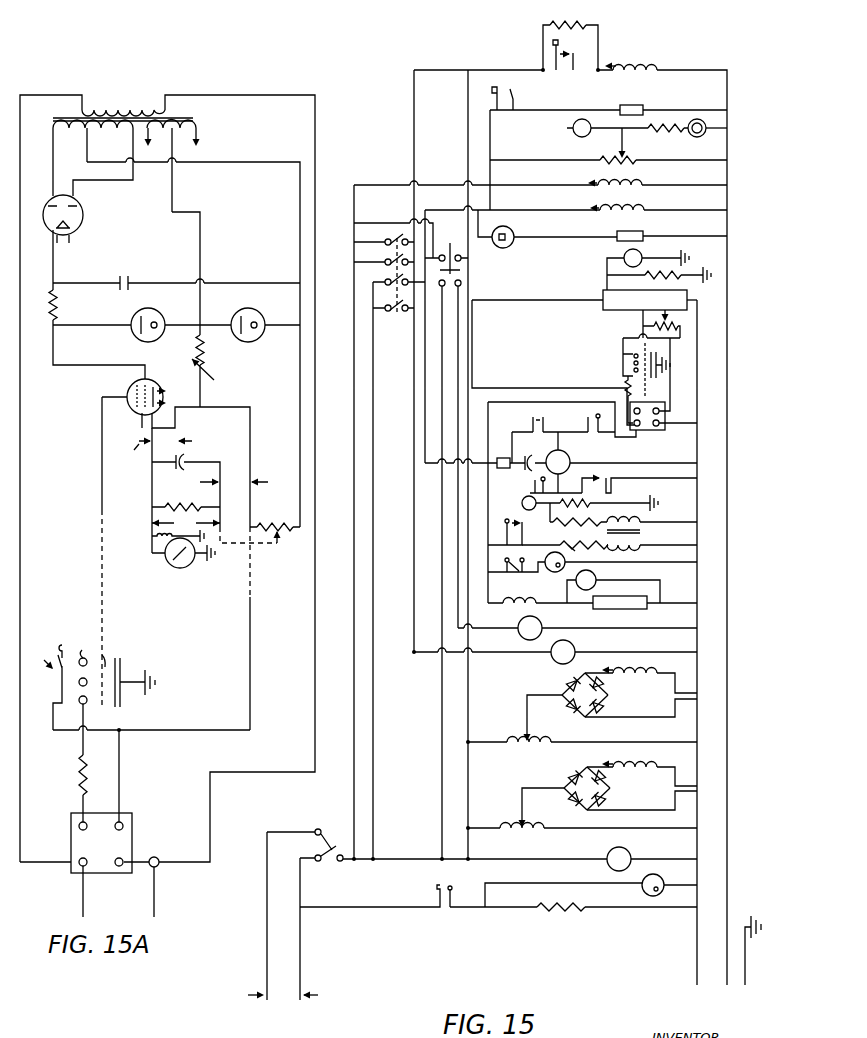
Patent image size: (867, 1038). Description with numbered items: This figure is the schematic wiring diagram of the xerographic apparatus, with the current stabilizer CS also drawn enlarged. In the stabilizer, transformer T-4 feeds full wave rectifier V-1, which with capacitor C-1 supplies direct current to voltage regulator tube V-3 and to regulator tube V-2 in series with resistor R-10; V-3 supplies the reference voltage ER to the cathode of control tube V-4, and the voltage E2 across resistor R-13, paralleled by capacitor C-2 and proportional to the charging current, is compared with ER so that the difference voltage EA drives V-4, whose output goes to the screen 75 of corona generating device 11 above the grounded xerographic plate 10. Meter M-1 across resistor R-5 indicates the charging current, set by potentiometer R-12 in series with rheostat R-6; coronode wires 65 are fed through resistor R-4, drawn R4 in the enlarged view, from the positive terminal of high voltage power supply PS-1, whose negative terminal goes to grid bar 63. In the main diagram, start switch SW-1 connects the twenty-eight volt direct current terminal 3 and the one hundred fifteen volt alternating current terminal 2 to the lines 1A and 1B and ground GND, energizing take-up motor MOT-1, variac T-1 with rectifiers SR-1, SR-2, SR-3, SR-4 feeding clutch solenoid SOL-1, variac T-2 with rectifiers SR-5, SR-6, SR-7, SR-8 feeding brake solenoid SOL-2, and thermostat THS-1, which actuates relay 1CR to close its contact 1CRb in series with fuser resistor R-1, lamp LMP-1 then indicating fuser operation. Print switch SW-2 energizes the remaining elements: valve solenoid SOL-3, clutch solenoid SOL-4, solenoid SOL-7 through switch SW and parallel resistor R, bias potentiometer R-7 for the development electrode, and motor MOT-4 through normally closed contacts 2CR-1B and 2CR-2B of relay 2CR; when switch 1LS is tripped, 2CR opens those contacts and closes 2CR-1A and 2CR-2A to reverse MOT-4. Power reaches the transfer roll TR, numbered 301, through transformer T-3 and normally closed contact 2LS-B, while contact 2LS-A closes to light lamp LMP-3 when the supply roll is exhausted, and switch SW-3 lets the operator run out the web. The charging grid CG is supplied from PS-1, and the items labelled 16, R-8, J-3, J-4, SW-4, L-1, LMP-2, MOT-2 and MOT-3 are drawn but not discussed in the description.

In FIG. 15A, the transformer T-4 is at (137, 165).
In FIG. 15A, the vacuum tube V-1 is at (74, 219).
In FIG. 15A, the resistor R-10 is at (67, 305).
In FIG. 15A, the capacitor C-1 is at (124, 280).
In FIG. 15A, the tube V-2 is at (142, 322).
In FIG. 15A, the tube V-3 is at (265, 322).
In FIG. 15A, the variable resistor R-12 is at (211, 371).
In FIG. 15A, the tube V-4 is at (171, 449).
In FIG. 15A, the voltage EA is at (163, 445).
In FIG. 15A, the capacitor C-2 is at (186, 490).
In FIG. 15A, the resistor R-13 is at (186, 502).
In FIG. 15A, the voltage E2 is at (186, 525).
In FIG. 15A, the voltage ER is at (234, 487).
In FIG. 15A, the resistor R-5 is at (156, 539).
In FIG. 15, the resistor R-5 is at (659, 273).
In FIG. 15A, the meter M-1 is at (183, 564).
In FIG. 15, the meter M-1 is at (648, 267).
In FIG. 15A, the potentiometer R-6 is at (275, 525).
In FIG. 15, the potentiometer R-6 is at (684, 338).
In FIG. 15A, the contact 63 is at (55, 681).
In FIG. 15A, the lead 11 is at (45, 660).
In FIG. 15A, the contacts 65 is at (81, 694).
In FIG. 15A, the contact 75 is at (111, 654).
In FIG. 15A, the capacitor 10 is at (135, 677).
In FIG. 15A, the resistor R4 is at (72, 788).
In FIG. 15A, the power supply plug PS-1 is at (118, 855).
In FIG. 15, the power supply plug PS-1 is at (592, 413).
In FIG. 15, the resistor R is at (570, 37).
In FIG. 15, the switch SW is at (567, 54).
In FIG. 15, the solenoid SOL-7 is at (631, 60).
In FIG. 15, the limit switch 1LS is at (516, 98).
In FIG. 15, the relay coil 2CR is at (608, 102).
In FIG. 15, the lamp 16 is at (592, 136).
In FIG. 15, the resistor R-8 is at (654, 141).
In FIG. 15, the jack J-3 is at (704, 136).
In FIG. 15, the resistor R-7 is at (608, 160).
In FIG. 15, the solenoid SOL-4 is at (608, 179).
In FIG. 15, the solenoid SOL-3 is at (608, 204).
In FIG. 15, the switch SW-2 is at (389, 285).
In FIG. 15, the switch SW-3 is at (467, 264).
In FIG. 15, the thermostat THS-1 is at (554, 241).
In FIG. 15, the relay 1CR is at (672, 230).
In FIG. 15, the current stabilizer CS is at (605, 310).
In FIG. 15, the charging grid CG is at (609, 370).
In FIG. 15, the resistor R-4 is at (625, 392).
In FIG. 15, the relay contact 2CR-2B is at (543, 420).
In FIG. 15, the relay contact 2CR-2A is at (584, 420).
In FIG. 15, the jack J-4 is at (509, 458).
In FIG. 15, the motor MOT-4 is at (621, 470).
In FIG. 15, the relay contact 2CR-1A is at (518, 488).
In FIG. 15, the relay contact 2CR-1B is at (639, 480).
In FIG. 15, the lamp 301 is at (522, 503).
In FIG. 15, the transformer T-3 is at (623, 534).
In FIG. 15, the transfer roll TR is at (565, 536).
In FIG. 15, the limit switch 2LS-B is at (505, 532).
In FIG. 15, the limit switch 2LS-A is at (512, 562).
In FIG. 15, the lamp LMP-3 is at (621, 559).
In FIG. 15, the switch SW-4 is at (613, 584).
In FIG. 15, the inductor L-1 is at (540, 595).
In FIG. 15, the lamp LMP-2 is at (645, 595).
In FIG. 15, the motor MOT-3 is at (577, 627).
In FIG. 15, the motor MOT-2 is at (555, 651).
In FIG. 15, the rectifier SR-6 is at (553, 684).
In FIG. 15, the rectifier SR-8 is at (611, 684).
In FIG. 15, the rectifier SR-5 is at (557, 707).
In FIG. 15, the rectifier SR-7 is at (609, 707).
In FIG. 15, the solenoid SOL-2 is at (641, 677).
In FIG. 15, the transformer T-2 is at (581, 751).
In FIG. 15, the rectifier SR-2 is at (557, 777).
In FIG. 15, the rectifier SR-4 is at (613, 778).
In FIG. 15, the rectifier SR-1 is at (558, 799).
In FIG. 15, the rectifier SR-3 is at (613, 799).
In FIG. 15, the solenoid SOL-1 is at (642, 770).
In FIG. 15, the transformer T-1 is at (581, 837).
In FIG. 15, the motor MOT-1 is at (520, 858).
In FIG. 15, the switch SW-1 is at (305, 837).
In FIG. 15, the relay contact 1CRb is at (471, 895).
In FIG. 15, the lamp LMP-1 is at (647, 888).
In FIG. 15, the fuser resistor R-1 is at (617, 911).
In FIG. 15, the terminal 28V DC 3 is at (219, 1003).
In FIG. 15, the terminal 115V 2 is at (344, 1003).
In FIG. 15, the bus 1A is at (694, 1002).
In FIG. 15, the bus 1B is at (723, 1002).
In FIG. 15, the ground GND is at (755, 962).